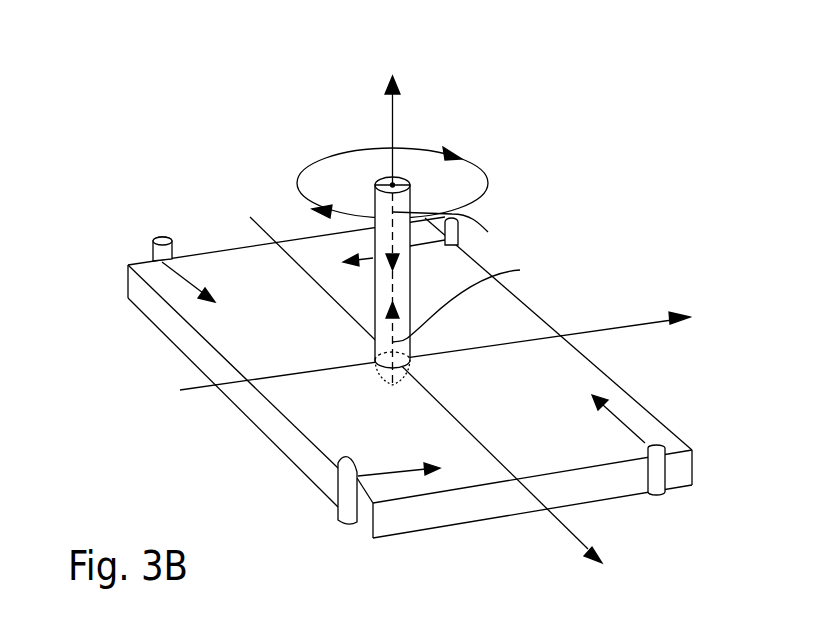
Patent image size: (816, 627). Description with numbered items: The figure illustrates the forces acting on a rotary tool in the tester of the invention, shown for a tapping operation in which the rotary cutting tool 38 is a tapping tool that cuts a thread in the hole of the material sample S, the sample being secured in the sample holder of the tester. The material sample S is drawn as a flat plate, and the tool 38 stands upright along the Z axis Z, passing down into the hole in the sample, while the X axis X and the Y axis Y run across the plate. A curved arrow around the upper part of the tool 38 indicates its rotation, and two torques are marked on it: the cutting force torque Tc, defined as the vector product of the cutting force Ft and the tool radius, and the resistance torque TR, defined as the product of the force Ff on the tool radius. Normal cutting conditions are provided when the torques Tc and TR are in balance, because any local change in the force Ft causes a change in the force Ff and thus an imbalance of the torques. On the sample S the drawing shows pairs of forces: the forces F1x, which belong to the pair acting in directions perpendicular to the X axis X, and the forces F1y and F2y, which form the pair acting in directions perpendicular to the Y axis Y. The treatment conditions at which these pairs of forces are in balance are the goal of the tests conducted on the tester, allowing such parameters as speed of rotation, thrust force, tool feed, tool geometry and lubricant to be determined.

The rotary cutting tool 38 is at (412, 193).
The material sample S is at (313, 427).
The cutting force torque Tc is at (455, 228).
The resistance torque TR is at (471, 300).
The force F1x is at (403, 352).
The force F1y is at (410, 455).
The force F2y is at (336, 256).
The X-axis X is at (450, 347).
The Y-axis Y is at (436, 395).
The Z-axis Z is at (412, 120).